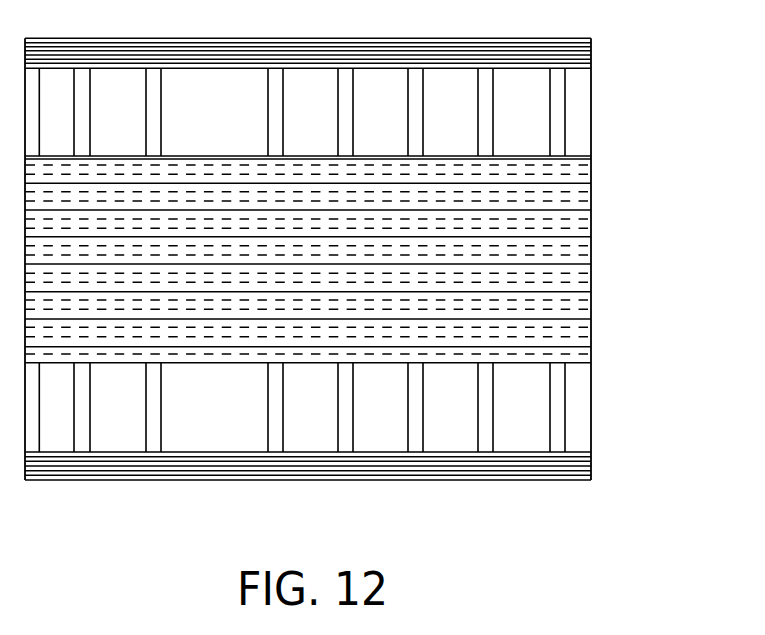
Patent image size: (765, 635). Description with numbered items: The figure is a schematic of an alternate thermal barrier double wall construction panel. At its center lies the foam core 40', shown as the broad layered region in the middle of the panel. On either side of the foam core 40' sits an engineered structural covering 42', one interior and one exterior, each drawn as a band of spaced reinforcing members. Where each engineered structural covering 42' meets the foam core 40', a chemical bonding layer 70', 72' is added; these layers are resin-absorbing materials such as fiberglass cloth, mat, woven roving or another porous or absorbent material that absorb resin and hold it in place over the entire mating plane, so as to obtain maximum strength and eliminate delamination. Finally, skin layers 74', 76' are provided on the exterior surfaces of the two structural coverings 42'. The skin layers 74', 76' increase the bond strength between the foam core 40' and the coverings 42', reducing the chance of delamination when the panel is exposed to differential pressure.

The skin layer 74' is at (375, 62).
The engineered structural covering 42' is at (389, 260).
The chemical bonding layer 70' is at (368, 177).
The foam core 40' is at (368, 259).
The chemical bonding layer 72' is at (369, 331).
The skin layer 76' is at (375, 452).